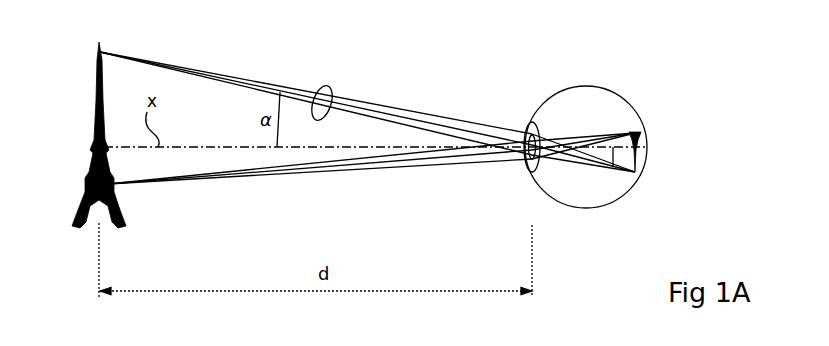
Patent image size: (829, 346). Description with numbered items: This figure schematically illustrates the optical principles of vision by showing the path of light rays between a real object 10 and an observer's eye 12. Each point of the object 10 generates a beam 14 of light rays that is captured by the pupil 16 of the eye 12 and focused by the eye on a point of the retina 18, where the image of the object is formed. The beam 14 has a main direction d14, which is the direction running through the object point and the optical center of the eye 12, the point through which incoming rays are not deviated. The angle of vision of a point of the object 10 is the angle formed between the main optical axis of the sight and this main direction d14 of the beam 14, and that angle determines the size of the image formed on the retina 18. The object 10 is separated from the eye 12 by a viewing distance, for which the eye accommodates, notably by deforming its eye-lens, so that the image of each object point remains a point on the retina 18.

The real object 10 is at (97, 121).
The observer's eye 12 is at (587, 86).
The beam of light rays 14 is at (323, 95).
The main direction of beam d14 is at (438, 130).
The pupil 16 is at (522, 150).
The retina 18 is at (647, 151).